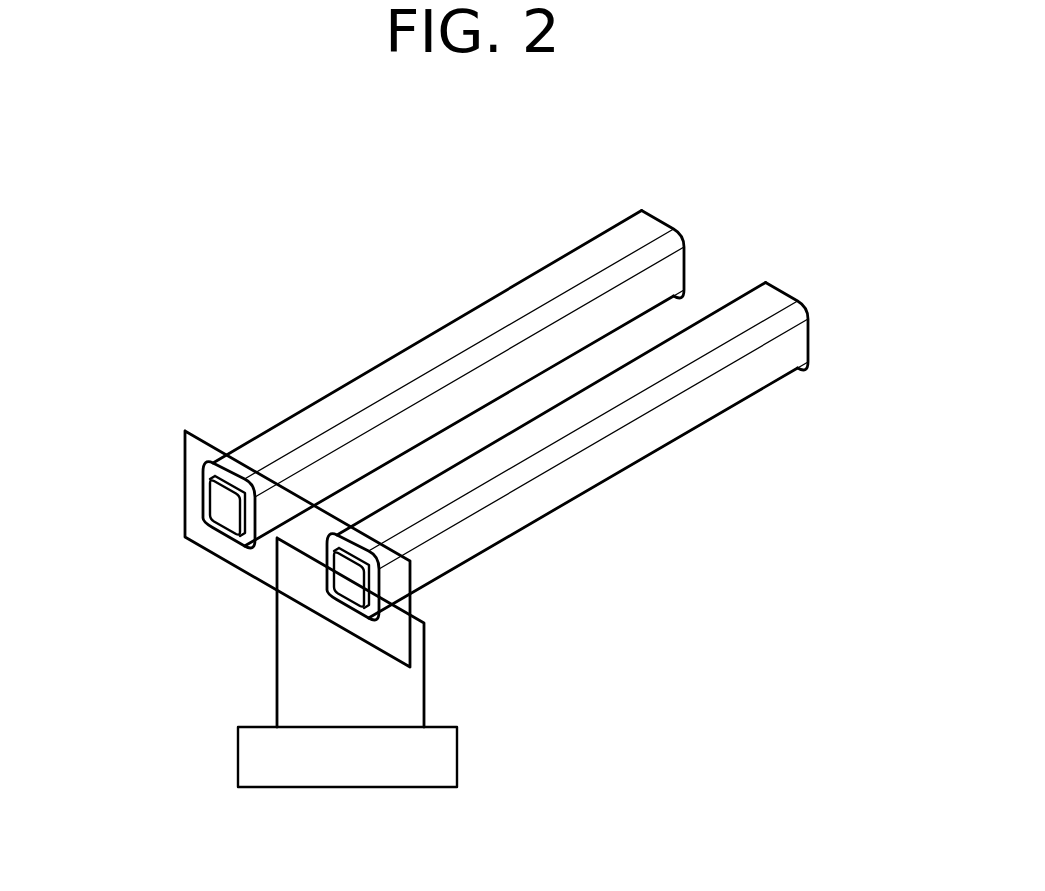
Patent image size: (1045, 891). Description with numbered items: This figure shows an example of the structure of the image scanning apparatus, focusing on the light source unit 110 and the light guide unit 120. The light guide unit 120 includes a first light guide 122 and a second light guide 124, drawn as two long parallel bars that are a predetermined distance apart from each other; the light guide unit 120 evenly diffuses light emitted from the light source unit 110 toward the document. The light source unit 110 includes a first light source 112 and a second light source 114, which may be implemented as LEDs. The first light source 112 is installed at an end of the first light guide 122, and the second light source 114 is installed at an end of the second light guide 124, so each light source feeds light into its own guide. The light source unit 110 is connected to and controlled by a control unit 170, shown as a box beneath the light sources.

The connecting member / bracket 110 is at (260, 579).
The first connector 112 is at (218, 513).
The second connector 114 is at (345, 585).
The lamp unit 120 is at (505, 366).
The first lamp 122 is at (578, 265).
The second lamp 124 is at (735, 327).
The control unit 170 is at (412, 787).